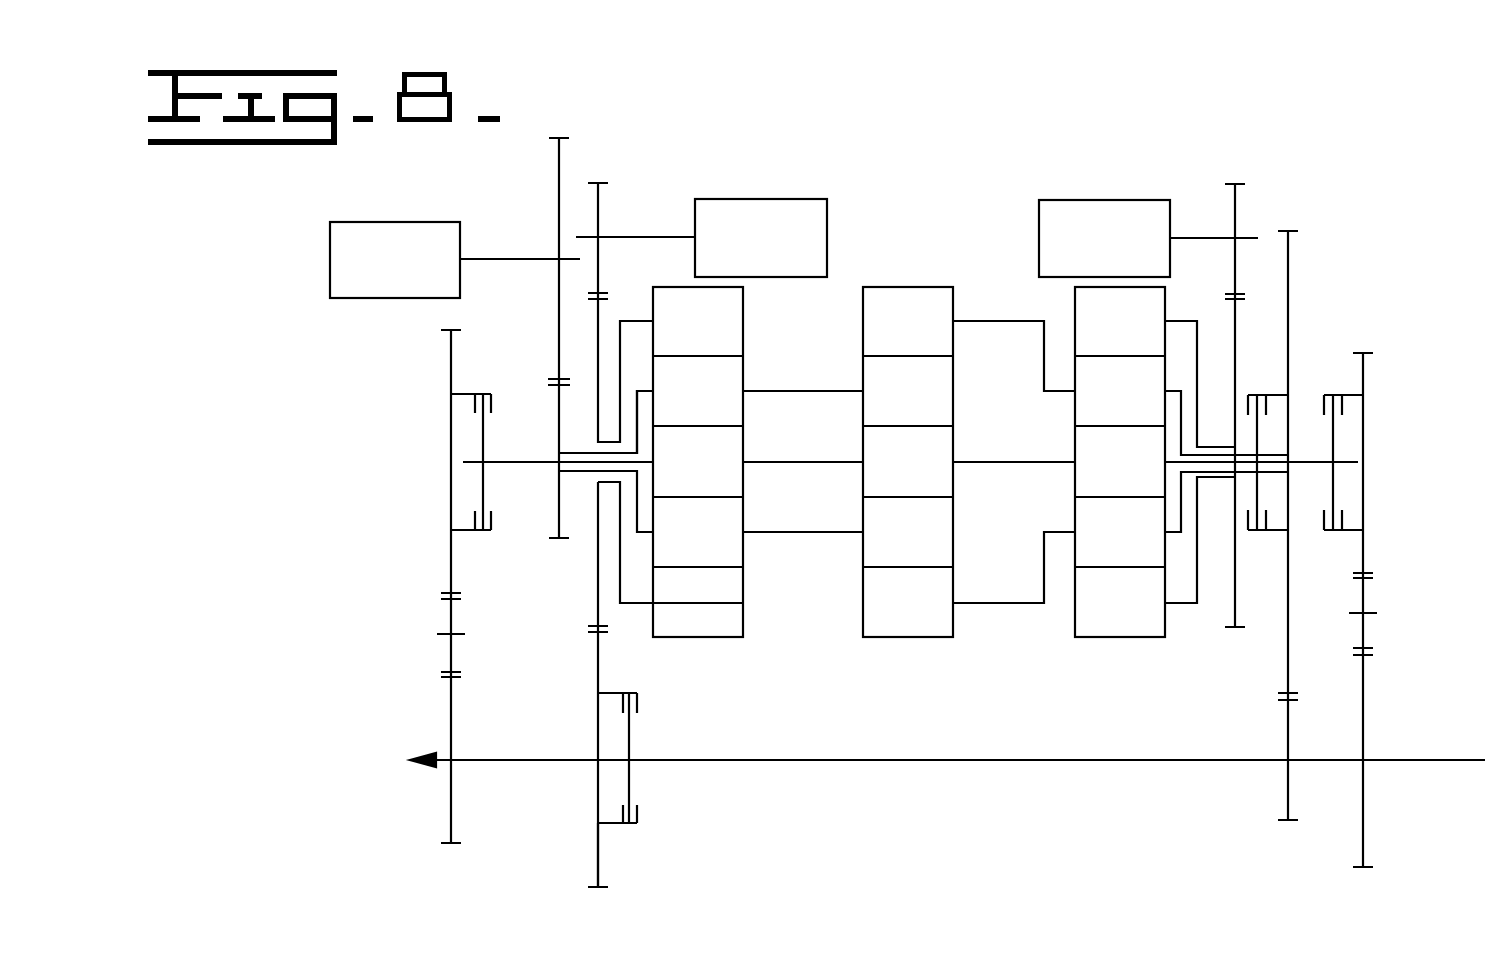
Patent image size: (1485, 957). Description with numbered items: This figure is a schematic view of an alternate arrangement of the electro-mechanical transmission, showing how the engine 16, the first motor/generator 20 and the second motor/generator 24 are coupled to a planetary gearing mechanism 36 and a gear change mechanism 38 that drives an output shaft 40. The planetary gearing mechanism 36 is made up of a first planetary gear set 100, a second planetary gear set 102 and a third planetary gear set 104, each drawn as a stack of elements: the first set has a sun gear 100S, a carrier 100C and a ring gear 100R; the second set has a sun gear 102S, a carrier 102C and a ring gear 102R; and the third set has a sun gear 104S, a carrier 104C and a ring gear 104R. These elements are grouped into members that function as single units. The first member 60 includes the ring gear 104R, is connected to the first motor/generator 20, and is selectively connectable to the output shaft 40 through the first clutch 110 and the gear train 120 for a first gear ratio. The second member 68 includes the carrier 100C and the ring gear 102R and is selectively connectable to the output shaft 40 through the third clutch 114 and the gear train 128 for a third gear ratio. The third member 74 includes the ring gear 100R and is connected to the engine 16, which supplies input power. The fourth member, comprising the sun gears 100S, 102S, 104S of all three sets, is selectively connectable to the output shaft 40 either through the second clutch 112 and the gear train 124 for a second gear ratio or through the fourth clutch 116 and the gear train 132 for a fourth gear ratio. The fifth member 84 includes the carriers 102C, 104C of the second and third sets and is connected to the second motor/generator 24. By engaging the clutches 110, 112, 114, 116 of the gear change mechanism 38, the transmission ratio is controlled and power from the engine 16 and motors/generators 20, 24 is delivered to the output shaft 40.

The engine 16 is at (1080, 200).
The first motor/generator 20 is at (760, 199).
The second motor/generator 24 is at (413, 222).
The planetary gearing mechanism 36 is at (830, 708).
The gear change mechanism 38 is at (877, 800).
The output shaft 40 is at (930, 762).
The first member 60 is at (641, 320).
The second member 68 is at (1182, 389).
The third member 74 is at (1177, 320).
The fifth member 84 is at (596, 453).
The first planetary gear set 100 is at (1118, 652).
The sun gear 100S is at (1075, 448).
The carrier 100C is at (1075, 520).
The ring gear 100R is at (1075, 615).
The second planetary gear set 102 is at (902, 652).
The sun gear 102S is at (863, 442).
The carrier 102C is at (863, 368).
The ring gear 102R is at (953, 615).
The third planetary gear set 104 is at (707, 652).
The sun gear 104S is at (743, 470).
The carrier 104C is at (743, 548).
The ring gear 104R is at (743, 622).
The first clutch 110 is at (627, 825).
The second clutch 112 is at (1363, 532).
The third clutch 114 is at (1288, 532).
The fourth clutch 116 is at (483, 394).
The gear train 120 is at (580, 842).
The gear train 124 is at (1353, 665).
The gear train 128 is at (1278, 711).
The gear train 132 is at (428, 697).